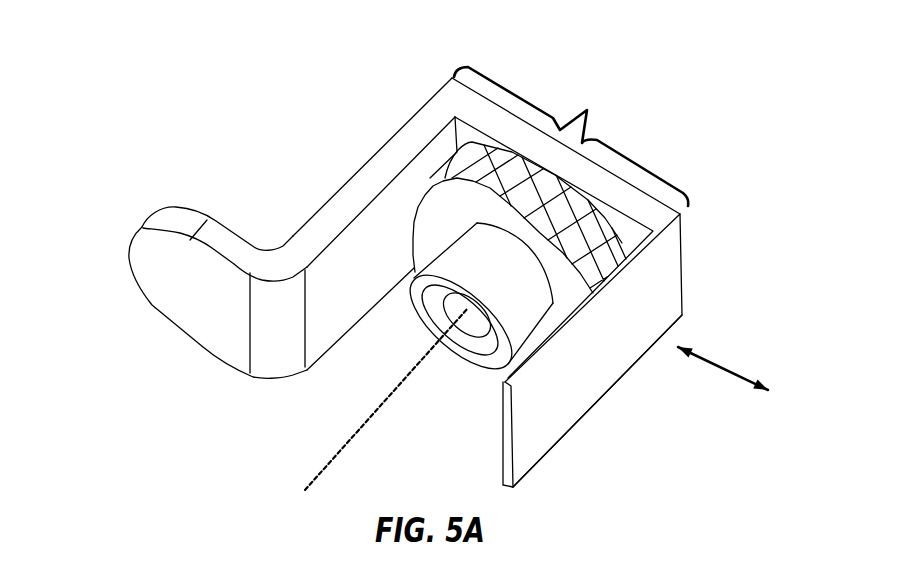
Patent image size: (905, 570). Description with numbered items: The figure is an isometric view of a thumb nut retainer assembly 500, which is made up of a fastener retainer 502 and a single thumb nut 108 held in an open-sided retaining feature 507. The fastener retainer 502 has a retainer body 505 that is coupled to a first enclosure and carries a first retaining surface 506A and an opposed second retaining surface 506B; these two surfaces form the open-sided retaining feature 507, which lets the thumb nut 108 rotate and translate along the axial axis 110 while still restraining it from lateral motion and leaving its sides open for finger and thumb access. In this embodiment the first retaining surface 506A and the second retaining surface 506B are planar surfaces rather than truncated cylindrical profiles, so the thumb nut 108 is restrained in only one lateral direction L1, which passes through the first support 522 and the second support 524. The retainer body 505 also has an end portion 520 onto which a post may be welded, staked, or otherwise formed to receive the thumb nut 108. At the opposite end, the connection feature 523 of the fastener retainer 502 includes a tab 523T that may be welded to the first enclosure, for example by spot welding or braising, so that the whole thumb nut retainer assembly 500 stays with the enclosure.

The thumb nut retainer assembly 500 is at (330, 67).
The fastener retainer 502 is at (438, 83).
The thumb nut 108 is at (447, 162).
The axial axis 110 is at (363, 427).
The end portion 520 is at (571, 136).
The first support 522 is at (632, 363).
The connection feature 523 is at (142, 225).
The tab 523T is at (180, 207).
The second support 524 is at (337, 190).
The retainer body 505 is at (572, 427).
The first retaining surface 506A is at (363, 264).
The second retaining surface 506B is at (503, 415).
The open-sided retaining feature 507 is at (333, 395).
The lateral direction L1 is at (720, 362).